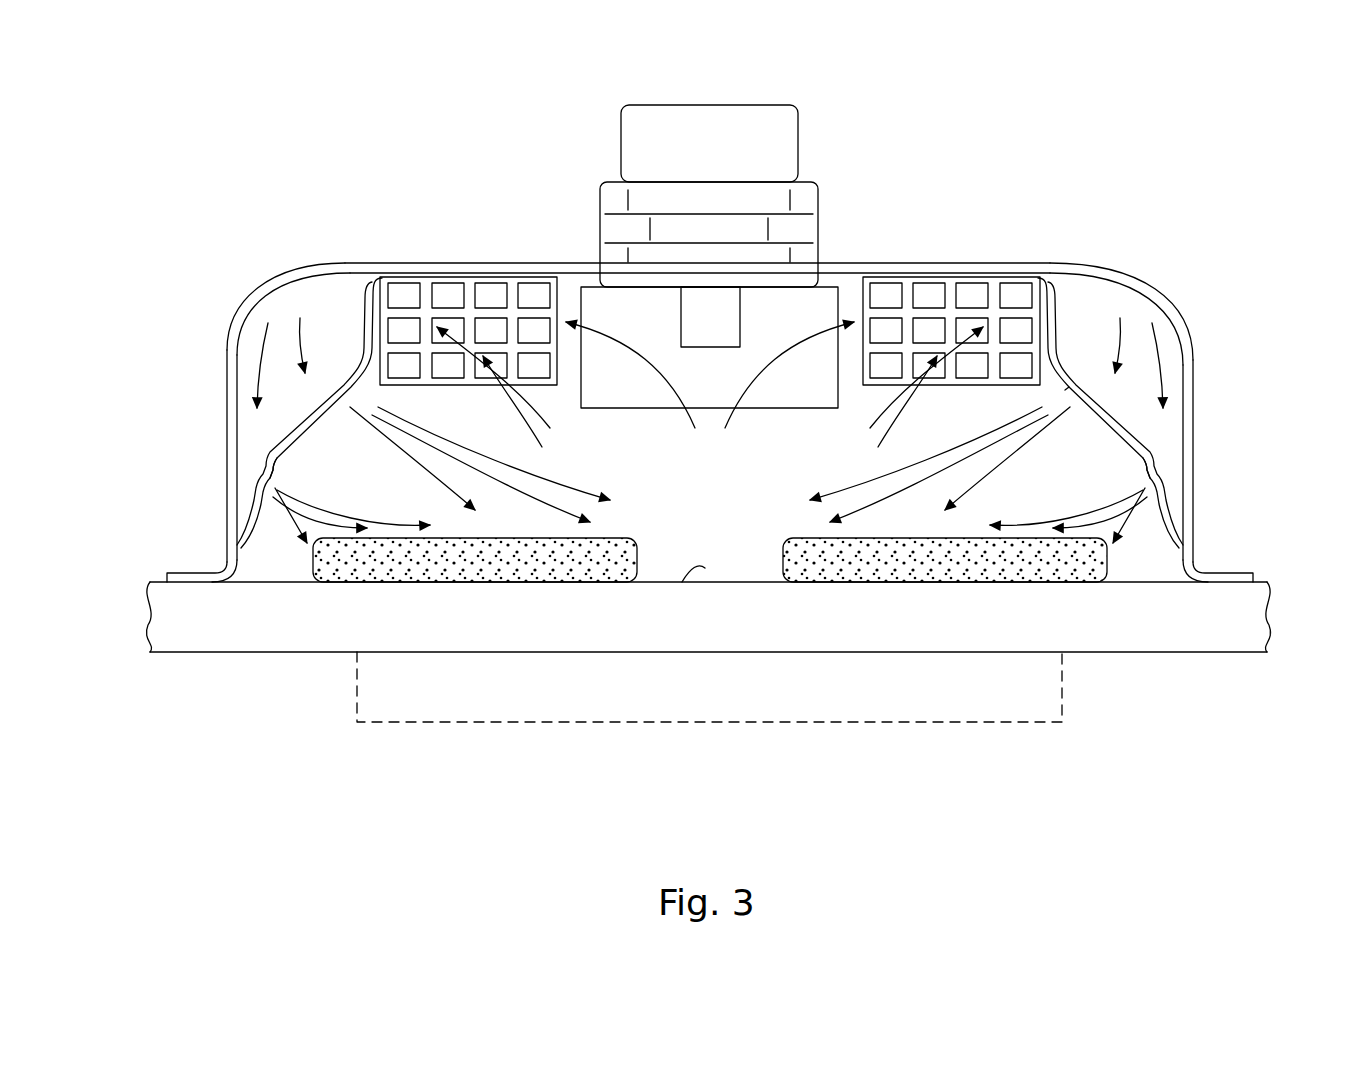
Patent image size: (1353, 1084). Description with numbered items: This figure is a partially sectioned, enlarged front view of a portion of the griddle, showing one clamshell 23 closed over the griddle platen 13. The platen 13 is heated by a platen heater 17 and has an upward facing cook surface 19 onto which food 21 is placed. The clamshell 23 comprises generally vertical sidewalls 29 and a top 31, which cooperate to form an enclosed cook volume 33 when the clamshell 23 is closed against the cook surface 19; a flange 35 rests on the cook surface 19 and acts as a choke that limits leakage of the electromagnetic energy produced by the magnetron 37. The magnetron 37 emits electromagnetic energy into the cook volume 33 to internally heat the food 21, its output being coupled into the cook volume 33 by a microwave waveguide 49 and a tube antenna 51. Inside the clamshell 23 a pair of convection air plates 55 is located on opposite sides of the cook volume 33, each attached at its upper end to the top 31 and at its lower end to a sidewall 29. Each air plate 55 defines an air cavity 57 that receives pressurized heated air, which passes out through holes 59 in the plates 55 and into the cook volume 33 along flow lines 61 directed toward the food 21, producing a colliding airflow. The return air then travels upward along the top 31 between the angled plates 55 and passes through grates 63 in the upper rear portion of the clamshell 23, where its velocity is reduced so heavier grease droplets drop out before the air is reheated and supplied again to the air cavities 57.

The griddle platen 13 is at (330, 630).
The platen heater 17 is at (460, 695).
The cook surface 19 is at (705, 568).
The food 21 is at (313, 565).
The clamshell 23 is at (1097, 256).
The sidewall 29 is at (228, 392).
The top 31 is at (343, 268).
The cook volume 33 is at (702, 498).
The flange 35 is at (1223, 573).
The magnetron 37 is at (798, 138).
The microwave waveguide 49 is at (652, 410).
The tube antenna 51 is at (681, 335).
The convection air plate 55 is at (270, 452).
The air cavity 57 is at (254, 326).
The hole 59 is at (343, 397).
The flow line 61 is at (1010, 422).
The grate 63 is at (467, 280).